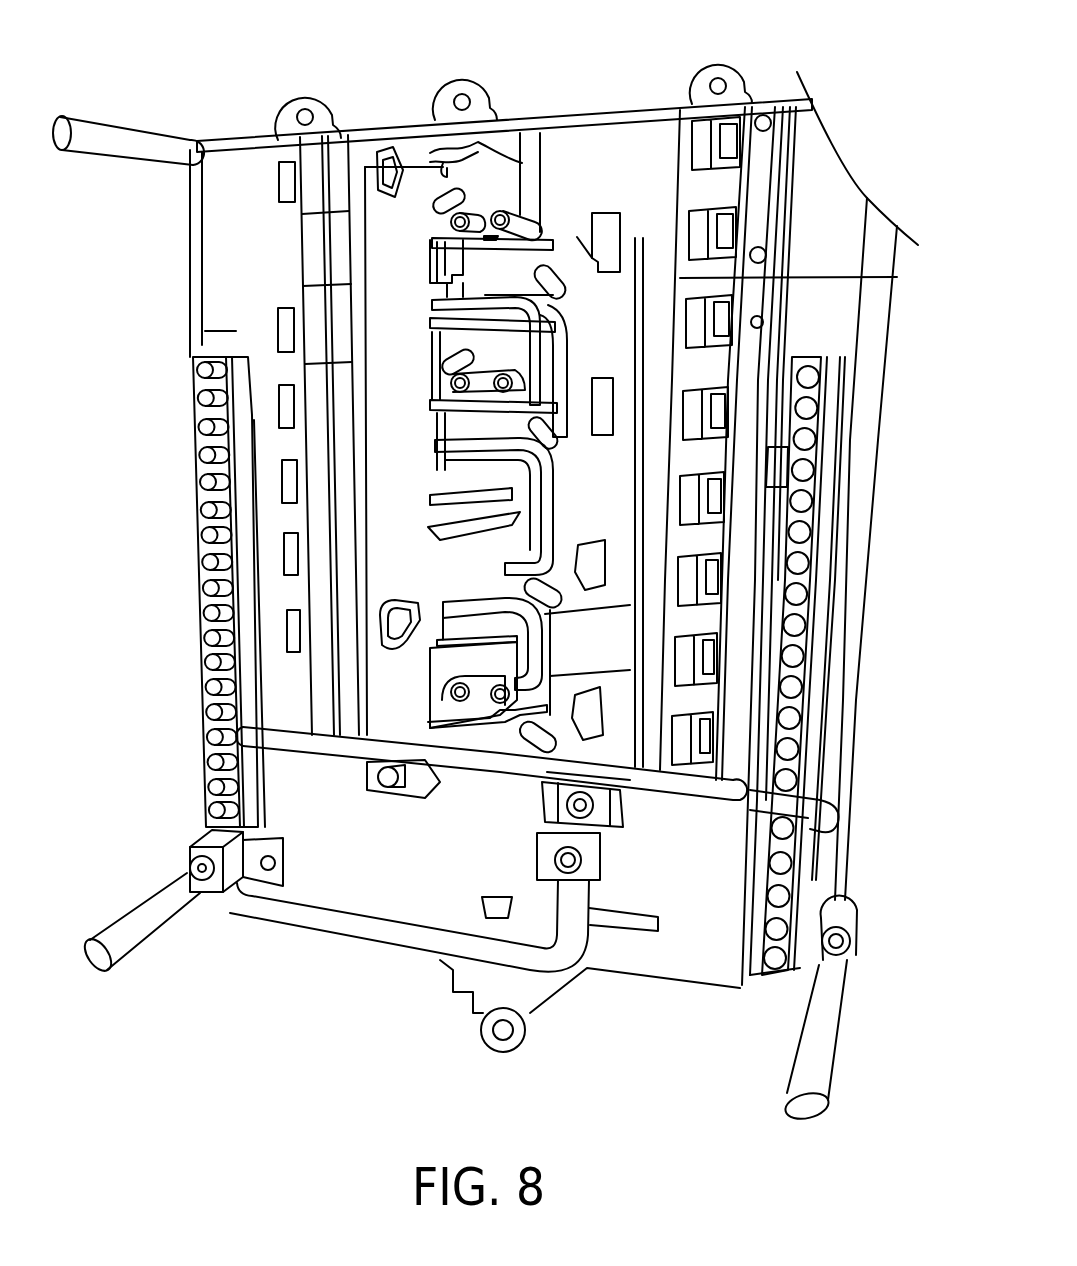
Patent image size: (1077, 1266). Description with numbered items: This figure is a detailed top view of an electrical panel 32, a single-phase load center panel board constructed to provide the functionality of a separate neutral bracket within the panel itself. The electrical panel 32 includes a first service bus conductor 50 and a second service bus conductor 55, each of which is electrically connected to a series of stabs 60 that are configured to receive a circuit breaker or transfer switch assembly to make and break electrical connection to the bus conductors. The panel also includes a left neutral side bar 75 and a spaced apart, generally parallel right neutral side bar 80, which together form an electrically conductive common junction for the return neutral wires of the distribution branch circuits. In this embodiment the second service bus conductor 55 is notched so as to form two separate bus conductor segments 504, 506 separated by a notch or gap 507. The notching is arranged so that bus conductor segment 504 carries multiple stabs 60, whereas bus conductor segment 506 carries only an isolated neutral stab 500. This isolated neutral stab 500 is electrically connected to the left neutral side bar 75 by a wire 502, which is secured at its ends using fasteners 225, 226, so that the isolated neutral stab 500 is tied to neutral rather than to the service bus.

The electrical panel 32 is at (212, 72).
The first service bus conductor 50 is at (390, 543).
The second service bus conductor 55 is at (633, 275).
The stab 60 is at (498, 426).
The left neutral side bar 75 is at (207, 810).
The right neutral side bar 80 is at (793, 882).
The fastener 225 is at (187, 873).
The fastener 226 is at (578, 870).
The isolated neutral stab 500 is at (507, 725).
The wire 502 is at (360, 930).
The bus conductor segment 504 is at (620, 327).
The bus conductor segment 506 is at (615, 713).
The notch 507 is at (617, 640).